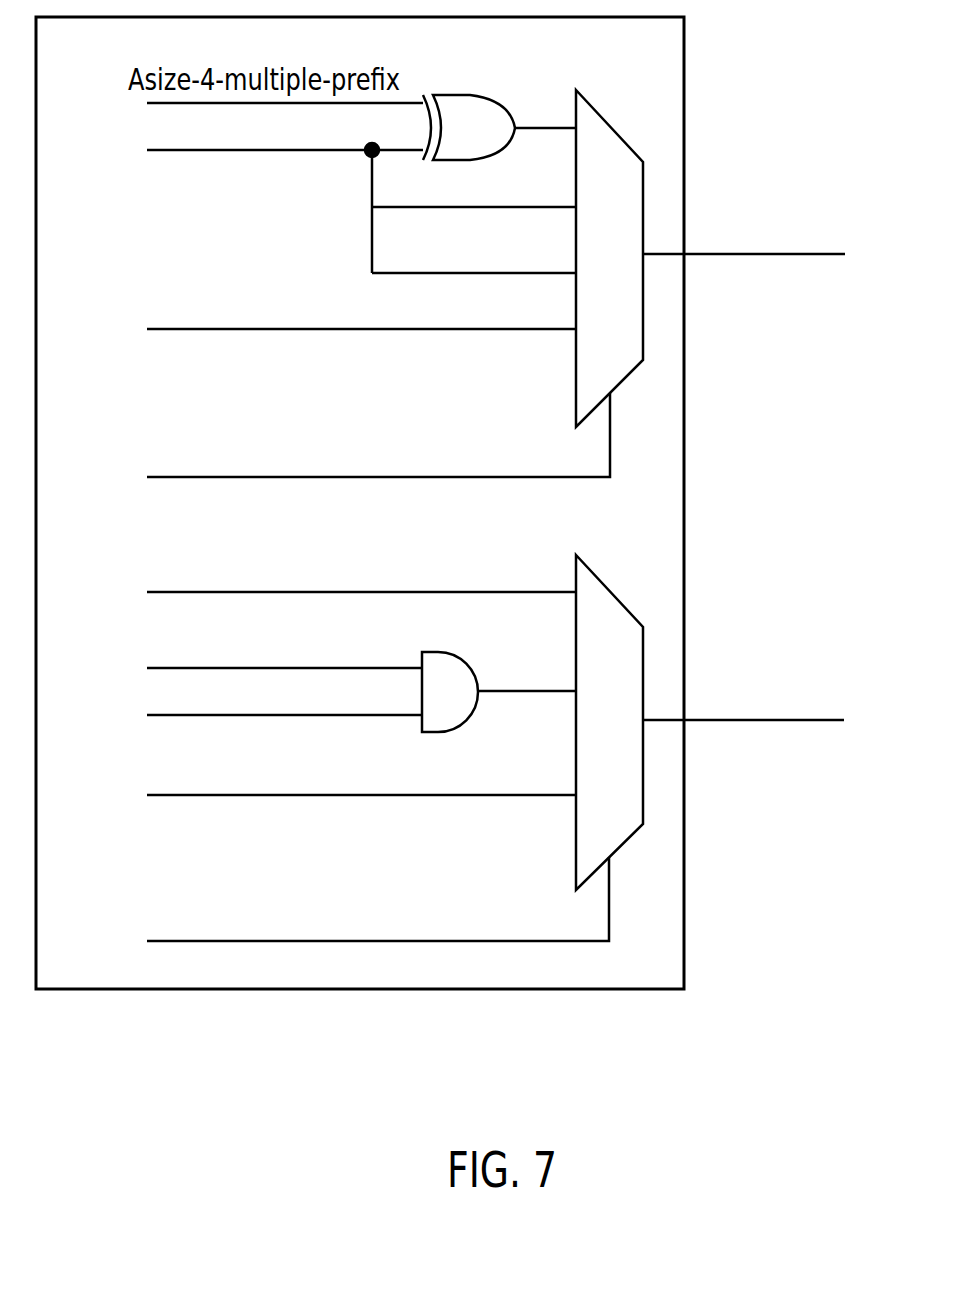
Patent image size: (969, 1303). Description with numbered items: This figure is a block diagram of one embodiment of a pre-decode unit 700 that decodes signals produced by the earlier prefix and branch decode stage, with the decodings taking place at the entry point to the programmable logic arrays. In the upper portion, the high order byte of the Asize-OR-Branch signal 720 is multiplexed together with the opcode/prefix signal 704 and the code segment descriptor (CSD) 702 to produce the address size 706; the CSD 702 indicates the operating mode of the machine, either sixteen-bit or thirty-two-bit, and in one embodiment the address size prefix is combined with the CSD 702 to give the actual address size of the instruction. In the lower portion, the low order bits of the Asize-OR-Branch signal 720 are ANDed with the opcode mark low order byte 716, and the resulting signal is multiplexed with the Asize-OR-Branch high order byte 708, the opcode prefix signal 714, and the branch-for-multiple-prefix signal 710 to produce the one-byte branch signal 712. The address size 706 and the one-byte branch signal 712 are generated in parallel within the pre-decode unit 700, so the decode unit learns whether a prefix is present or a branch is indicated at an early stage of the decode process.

The pre-decode unit 700 is at (255, 992).
The code segment descriptor (CSD) 702 is at (172, 153).
The opcode/prefix signal 704 is at (249, 422).
The address size 706 is at (795, 210).
The Asize-OR-Branch[0] signal 708 is at (138, 778).
The branch-for-multiple-prefix signal 710 is at (138, 578).
The one-byte branch signal 712 is at (795, 675).
The opcode prefix signal 714 is at (250, 885).
The opcode mark low order byte 716 is at (138, 701).
The Asize-OR-Branch signal 720 is at (158, 285).